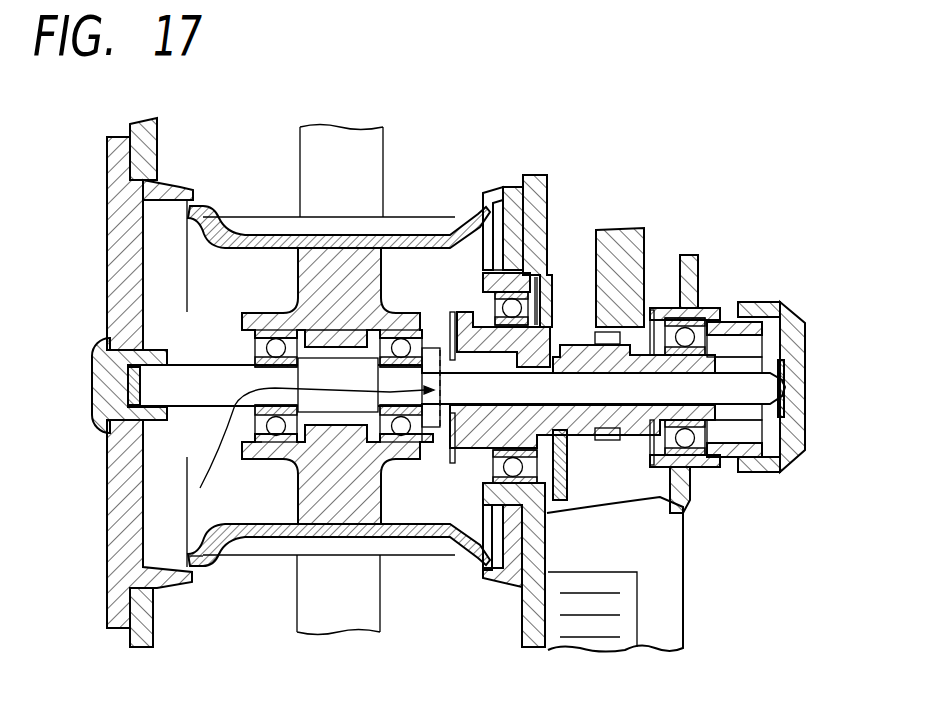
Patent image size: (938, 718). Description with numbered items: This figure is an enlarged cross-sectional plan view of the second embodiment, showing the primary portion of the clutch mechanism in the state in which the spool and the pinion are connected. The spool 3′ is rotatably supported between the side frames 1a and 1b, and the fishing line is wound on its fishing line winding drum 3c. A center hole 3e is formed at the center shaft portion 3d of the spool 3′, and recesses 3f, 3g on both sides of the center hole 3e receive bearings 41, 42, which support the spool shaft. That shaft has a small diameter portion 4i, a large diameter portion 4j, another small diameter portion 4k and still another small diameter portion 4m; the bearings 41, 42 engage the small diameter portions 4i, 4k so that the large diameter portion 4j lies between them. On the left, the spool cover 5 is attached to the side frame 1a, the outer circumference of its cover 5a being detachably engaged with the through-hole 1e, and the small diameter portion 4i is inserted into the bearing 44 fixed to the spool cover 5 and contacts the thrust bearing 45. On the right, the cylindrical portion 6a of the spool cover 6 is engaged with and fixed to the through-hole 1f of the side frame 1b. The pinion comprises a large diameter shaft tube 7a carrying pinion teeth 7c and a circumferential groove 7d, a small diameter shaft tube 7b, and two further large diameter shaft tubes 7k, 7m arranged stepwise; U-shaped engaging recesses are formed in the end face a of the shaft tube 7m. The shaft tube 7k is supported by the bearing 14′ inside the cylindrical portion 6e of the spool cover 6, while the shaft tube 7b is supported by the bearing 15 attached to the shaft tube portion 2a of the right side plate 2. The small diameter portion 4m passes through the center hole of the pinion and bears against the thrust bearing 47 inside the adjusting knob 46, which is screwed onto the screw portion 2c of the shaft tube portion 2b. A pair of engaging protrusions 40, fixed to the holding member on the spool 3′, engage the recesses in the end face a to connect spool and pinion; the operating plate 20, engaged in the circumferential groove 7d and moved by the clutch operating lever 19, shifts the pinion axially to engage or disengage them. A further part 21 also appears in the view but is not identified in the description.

The side frame 1a is at (130, 132).
The side frame 1b is at (535, 176).
The through-hole 1e is at (150, 189).
The through-hole 1f is at (548, 288).
The right side plate 2 is at (690, 585).
The shaft tube portion 2a is at (676, 306).
The shaft tube portion 2b is at (700, 306).
The screw portion 2c is at (800, 302).
The spool 3′ is at (357, 355).
The fishing line winding drum 3c is at (330, 240).
The center shaft portion 3d is at (380, 207).
The center hole 3e is at (325, 430).
The recess 3f is at (270, 330).
The recess 3g is at (363, 463).
The small diameter portion 4i is at (177, 408).
The large diameter portion 4j is at (297, 543).
The small diameter portion 4k is at (285, 240).
The small diameter portion 4m is at (793, 463).
The spool cover 5 is at (104, 240).
The cover 5a is at (130, 174).
The spool cover 6 is at (501, 588).
The cylindrical portion 6a is at (567, 337).
The cylindrical portion 6e is at (487, 192).
The large diameter shaft tube 7a is at (595, 450).
The small diameter shaft tube 7b is at (717, 448).
The pinion teeth 7c is at (668, 472).
The circumferential groove 7d is at (590, 337).
The large diameter shaft tube 7k is at (487, 508).
The large diameter shaft tube 7m is at (455, 465).
The bearing 14′ is at (509, 206).
The bearing 15 is at (708, 330).
The clutch operating lever 19 is at (640, 618).
The operating plate 20 is at (565, 502).
The magnet block 21 is at (636, 233).
The engaging protrusions 40 is at (430, 350).
The bearing 41 is at (262, 462).
The bearing 42 is at (410, 463).
The bearing 44 is at (92, 362).
The thrust bearing 45 is at (128, 388).
The adjusting knob 46 is at (770, 300).
The thrust bearing 47 is at (807, 377).
The end face a is at (315, 446).